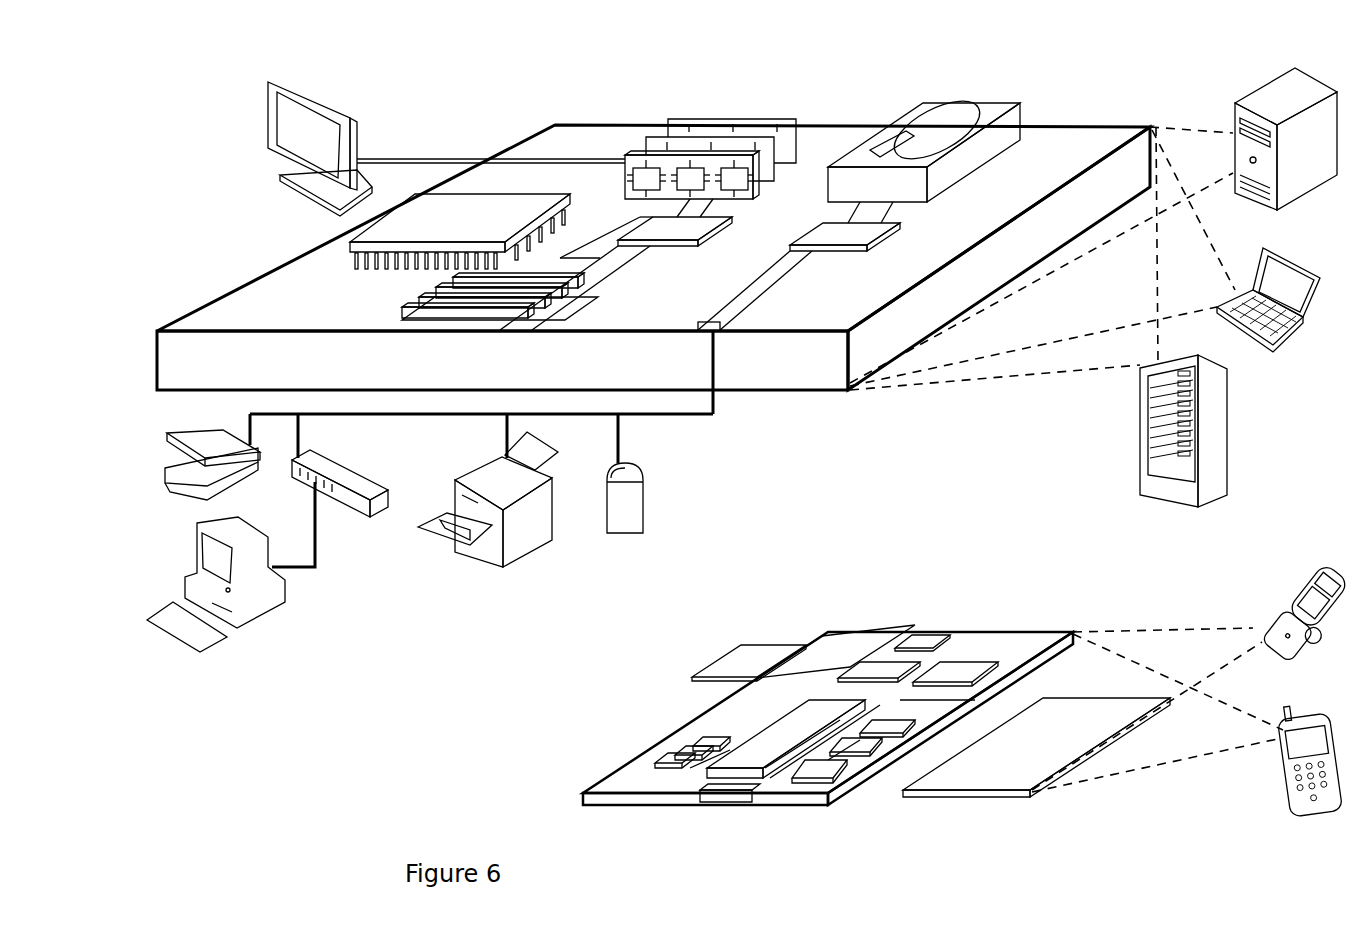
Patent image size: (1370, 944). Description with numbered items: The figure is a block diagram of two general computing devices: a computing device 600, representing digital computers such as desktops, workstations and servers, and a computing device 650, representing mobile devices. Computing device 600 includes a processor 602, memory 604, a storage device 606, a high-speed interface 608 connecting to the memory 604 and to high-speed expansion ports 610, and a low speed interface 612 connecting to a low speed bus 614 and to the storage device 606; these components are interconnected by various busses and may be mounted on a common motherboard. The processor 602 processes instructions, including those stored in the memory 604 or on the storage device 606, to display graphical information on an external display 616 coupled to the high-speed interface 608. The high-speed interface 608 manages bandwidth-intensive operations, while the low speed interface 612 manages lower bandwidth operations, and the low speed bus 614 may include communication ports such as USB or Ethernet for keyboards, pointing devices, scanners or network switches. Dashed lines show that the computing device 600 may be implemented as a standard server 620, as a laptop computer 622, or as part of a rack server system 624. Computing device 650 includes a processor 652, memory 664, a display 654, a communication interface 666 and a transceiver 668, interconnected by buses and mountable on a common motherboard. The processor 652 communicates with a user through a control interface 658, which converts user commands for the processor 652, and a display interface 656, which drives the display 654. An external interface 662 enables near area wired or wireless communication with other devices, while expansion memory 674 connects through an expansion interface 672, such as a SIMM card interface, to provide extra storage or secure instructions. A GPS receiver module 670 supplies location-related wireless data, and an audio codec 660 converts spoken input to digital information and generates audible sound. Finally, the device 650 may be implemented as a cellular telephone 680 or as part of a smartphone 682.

The computing device 600 is at (478, 94).
The processor 602 is at (350, 246).
The memory 604 is at (690, 118).
The storage device 606 is at (922, 108).
The high-speed interface 608 is at (655, 232).
The high-speed expansion ports 610 is at (420, 297).
The low speed interface 612 is at (845, 236).
The low speed bus 614 is at (727, 332).
The display 616 is at (270, 82).
The standard server 620 is at (1236, 112).
The laptop computer 622 is at (1262, 252).
The rack server system 624 is at (1140, 456).
The computing device 650 is at (808, 602).
The processor 652 is at (773, 786).
The display 654 is at (1035, 795).
The display interface 656 is at (840, 797).
The control interface 658 is at (868, 752).
The audio codec 660 is at (890, 735).
The external interface 662 is at (722, 795).
The memory 664 is at (672, 754).
The communication interface 666 is at (878, 668).
The transceiver 668 is at (956, 668).
The GPS receiver module 670 is at (922, 634).
The expansion interface 672 is at (806, 649).
The expansion memory 674 is at (737, 646).
The cellular telephone 680 is at (1310, 572).
The smartphone 682 is at (1290, 712).